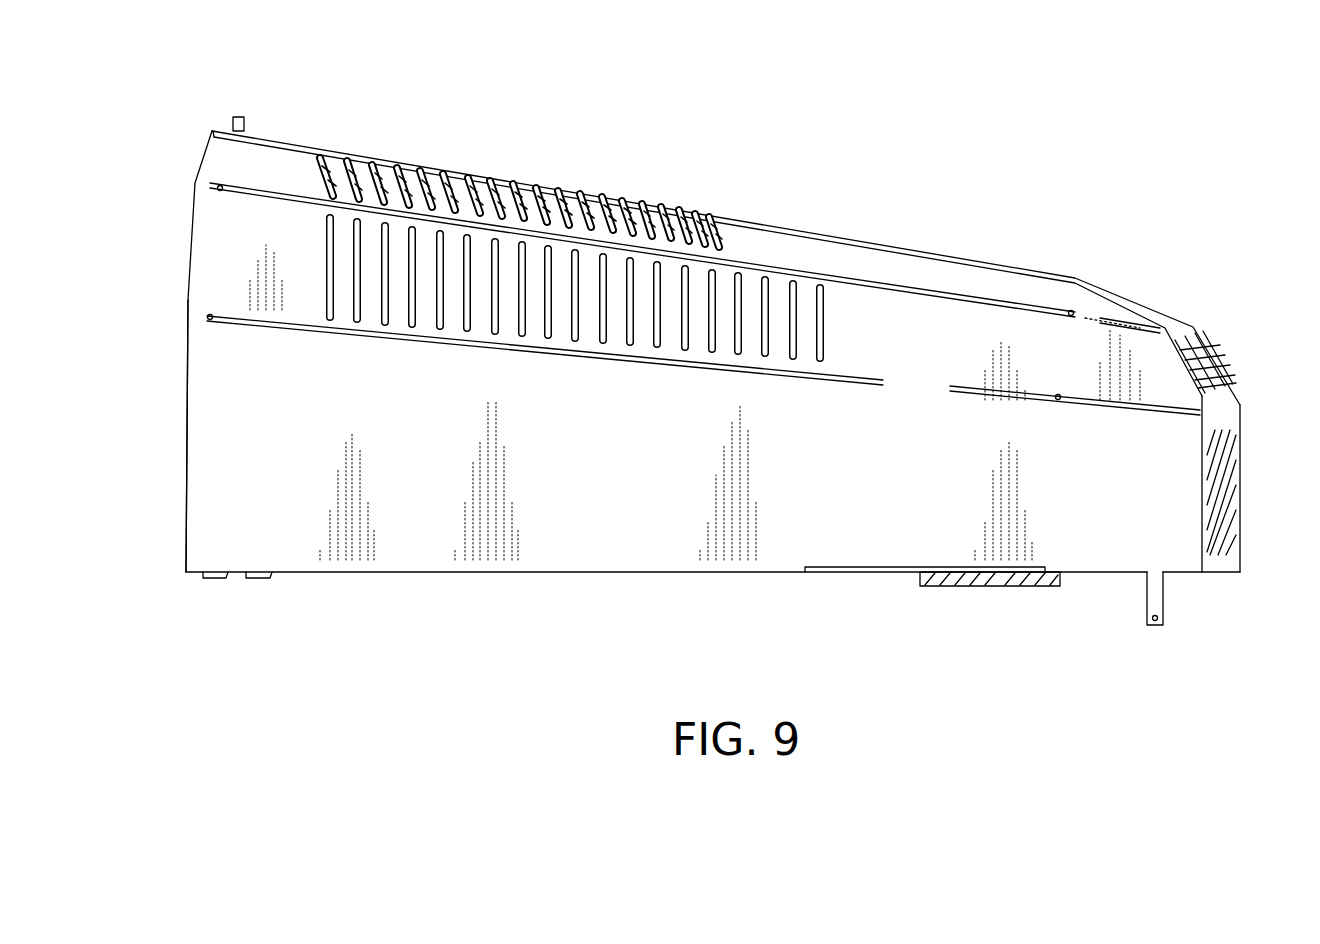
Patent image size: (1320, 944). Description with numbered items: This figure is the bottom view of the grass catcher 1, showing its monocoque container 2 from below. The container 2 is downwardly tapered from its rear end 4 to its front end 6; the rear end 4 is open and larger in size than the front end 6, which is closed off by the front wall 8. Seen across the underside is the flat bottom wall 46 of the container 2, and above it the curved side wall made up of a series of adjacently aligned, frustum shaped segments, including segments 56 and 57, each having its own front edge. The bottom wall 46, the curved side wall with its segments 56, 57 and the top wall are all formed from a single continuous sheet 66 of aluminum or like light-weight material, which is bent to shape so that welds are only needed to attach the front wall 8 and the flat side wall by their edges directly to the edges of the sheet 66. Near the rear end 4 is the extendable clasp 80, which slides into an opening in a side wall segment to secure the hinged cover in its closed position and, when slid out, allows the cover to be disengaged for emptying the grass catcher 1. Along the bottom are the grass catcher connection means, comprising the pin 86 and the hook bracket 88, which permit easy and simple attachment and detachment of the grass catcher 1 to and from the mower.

The grass catcher 1 is at (703, 150).
The monocoque container 2 is at (300, 136).
The rear end 4 is at (191, 268).
The front end 6 is at (1238, 463).
The front wall 8 is at (1225, 390).
The flat bottom wall 46 is at (600, 473).
The frustum shaped segment 56 is at (893, 262).
The frustum shaped segment 57 is at (1086, 354).
The single continuous sheet 66 is at (933, 393).
The extendable clasp 80 is at (238, 116).
The pin 86 is at (1165, 595).
The hook bracket 88 is at (997, 577).